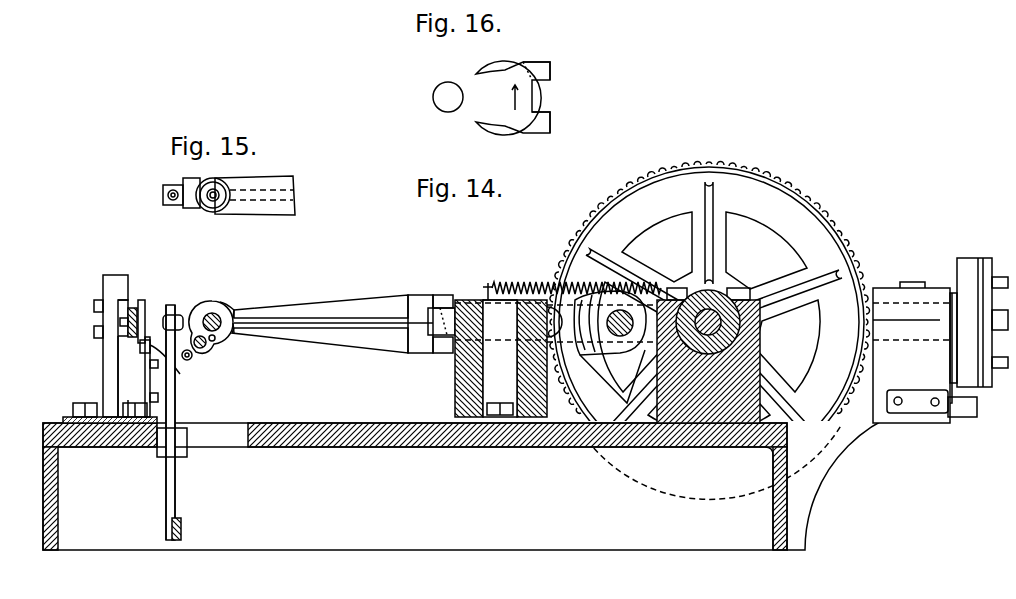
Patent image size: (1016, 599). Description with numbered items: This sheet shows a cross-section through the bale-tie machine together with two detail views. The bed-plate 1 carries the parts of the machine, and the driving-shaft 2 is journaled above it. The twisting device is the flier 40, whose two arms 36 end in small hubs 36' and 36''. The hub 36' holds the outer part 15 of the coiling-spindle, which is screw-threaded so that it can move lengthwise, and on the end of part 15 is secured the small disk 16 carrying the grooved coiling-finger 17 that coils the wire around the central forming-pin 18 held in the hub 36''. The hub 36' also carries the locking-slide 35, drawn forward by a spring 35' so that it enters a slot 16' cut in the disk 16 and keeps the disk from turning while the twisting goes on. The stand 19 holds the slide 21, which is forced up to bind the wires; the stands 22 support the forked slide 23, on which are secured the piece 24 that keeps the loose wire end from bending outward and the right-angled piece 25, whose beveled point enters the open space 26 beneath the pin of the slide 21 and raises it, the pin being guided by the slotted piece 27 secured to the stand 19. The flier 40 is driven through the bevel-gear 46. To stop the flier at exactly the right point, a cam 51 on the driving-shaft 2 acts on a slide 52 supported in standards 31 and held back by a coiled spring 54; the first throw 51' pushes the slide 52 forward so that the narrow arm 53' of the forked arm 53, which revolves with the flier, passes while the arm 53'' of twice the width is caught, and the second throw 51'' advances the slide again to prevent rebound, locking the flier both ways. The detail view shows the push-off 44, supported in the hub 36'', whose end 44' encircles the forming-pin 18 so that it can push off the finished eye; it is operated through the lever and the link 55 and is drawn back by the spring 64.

In FIG. 14, the bed-plate 1 is at (497, 421).
In FIG. 14, the driving-shaft 2 is at (624, 336).
In FIG. 14, the part of the coiling-spindle 15 is at (207, 316).
In FIG. 14, the disk 16 is at (211, 316).
In FIG. 14, the slot 16' is at (246, 298).
In FIG. 14, the coiling-finger 17 is at (218, 338).
In FIG. 15, the central forming-pin 18 is at (218, 186).
In FIG. 14, the stand 19 is at (106, 346).
In FIG. 14, the slide 21 is at (176, 368).
In FIG. 14, the stands 22 is at (128, 358).
In FIG. 14, the forked slide 23 is at (135, 310).
In FIG. 14, the piece 24 is at (120, 322).
In FIG. 14, the right-angled piece 25 is at (144, 312).
In FIG. 14, the open space 26 is at (141, 349).
In FIG. 14, the slotted piece 27 is at (155, 377).
In FIG. 14, the standards 31 is at (492, 358).
In FIG. 14, the locking-slide 35 is at (216, 349).
In FIG. 14, the spring 35' is at (206, 362).
In FIG. 15, the arms 36 is at (255, 195).
In FIG. 14, the arms 36 is at (332, 338).
In FIG. 14, the hub 36' is at (239, 297).
In FIG. 15, the hub 36'' is at (199, 183).
In FIG. 14, the flier 40 is at (333, 313).
In FIG. 14, the push-off 44 is at (173, 322).
In FIG. 15, the end of push-off 44' is at (210, 214).
In FIG. 14, the bevel-gear 46 is at (736, 170).
In FIG. 14, the cam 51 is at (603, 347).
In FIG. 14, the first throw 51' is at (607, 339).
In FIG. 14, the second throw 51'' is at (564, 342).
In FIG. 14, the slide 52 is at (500, 314).
In FIG. 16, the forked arm 53 is at (491, 98).
In FIG. 16, the arm of forked arm 53' is at (551, 67).
In FIG. 14, the arm of forked arm 53' is at (442, 301).
In FIG. 16, the arm of forked arm 53'' is at (558, 124).
In FIG. 14, the arm of forked arm 53'' is at (431, 361).
In FIG. 14, the coiled spring 54 is at (176, 410).
In FIG. 14, the link 55 is at (182, 530).
In FIG. 15, the spring 64 is at (174, 200).